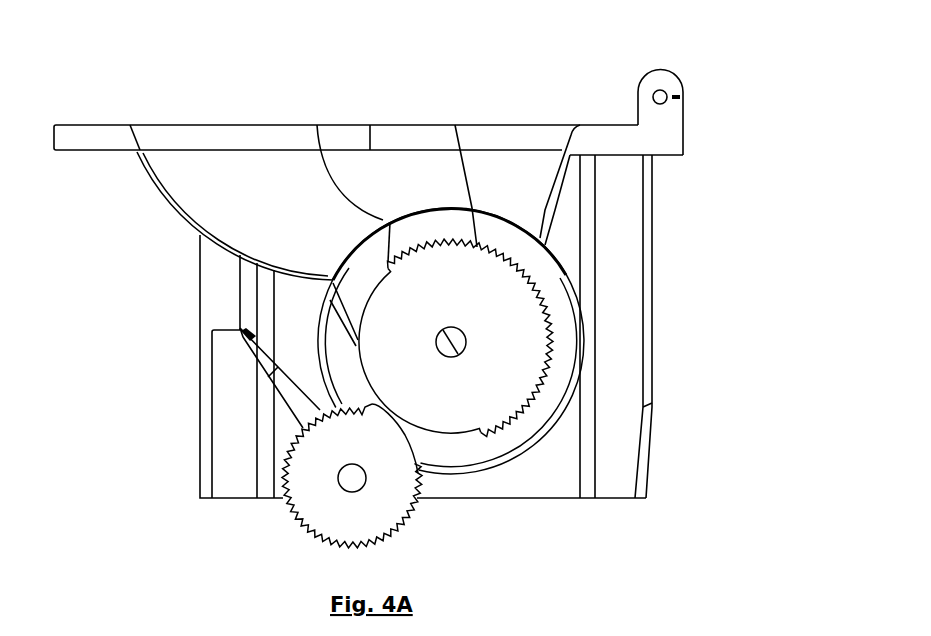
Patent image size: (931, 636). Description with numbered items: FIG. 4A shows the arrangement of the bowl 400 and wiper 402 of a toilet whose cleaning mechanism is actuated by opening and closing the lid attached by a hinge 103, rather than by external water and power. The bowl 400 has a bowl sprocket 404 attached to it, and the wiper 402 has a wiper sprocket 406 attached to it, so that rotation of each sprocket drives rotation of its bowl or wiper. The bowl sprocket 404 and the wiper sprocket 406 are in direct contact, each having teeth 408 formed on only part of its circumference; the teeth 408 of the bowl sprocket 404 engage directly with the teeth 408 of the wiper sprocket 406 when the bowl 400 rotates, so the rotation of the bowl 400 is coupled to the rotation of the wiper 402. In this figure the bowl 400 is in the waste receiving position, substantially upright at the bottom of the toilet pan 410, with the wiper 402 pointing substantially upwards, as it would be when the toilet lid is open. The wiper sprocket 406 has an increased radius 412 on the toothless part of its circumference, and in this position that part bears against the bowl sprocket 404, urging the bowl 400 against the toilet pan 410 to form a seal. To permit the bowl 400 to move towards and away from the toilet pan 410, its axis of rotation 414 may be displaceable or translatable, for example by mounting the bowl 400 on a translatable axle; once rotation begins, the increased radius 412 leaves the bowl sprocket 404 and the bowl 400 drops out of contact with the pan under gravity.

The hinge 103 is at (660, 90).
The bowl 400 is at (340, 307).
The toilet pan 410 is at (173, 197).
The wiper 402 is at (270, 375).
The bowl sprocket 404 is at (566, 345).
The axis of rotation 414 is at (457, 355).
The increased radius 412 is at (377, 409).
The wiper sprocket 406 is at (318, 542).
The teeth 408 is at (417, 513).